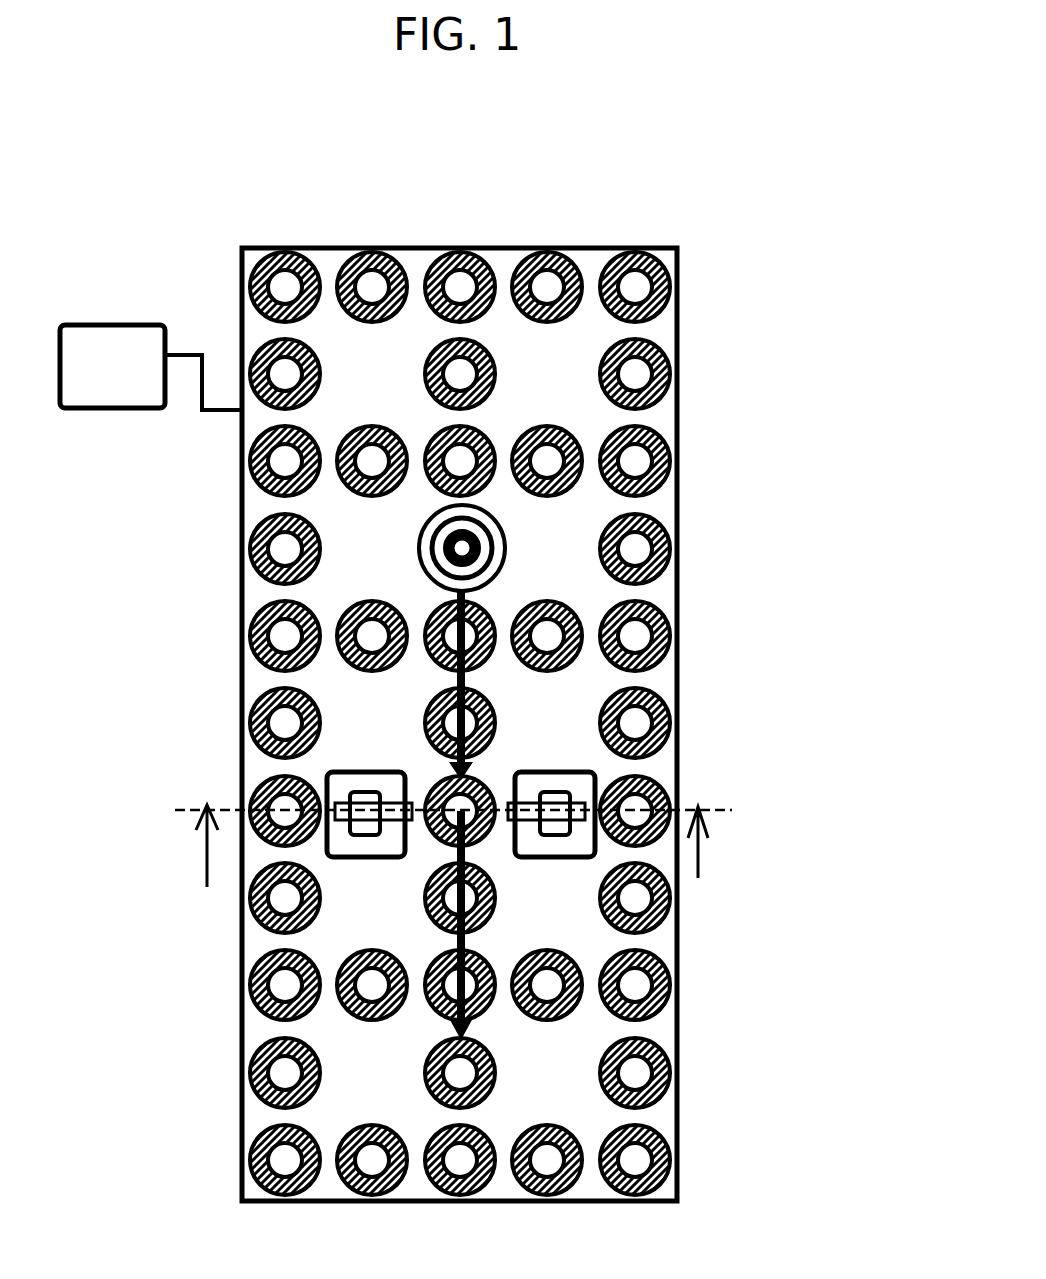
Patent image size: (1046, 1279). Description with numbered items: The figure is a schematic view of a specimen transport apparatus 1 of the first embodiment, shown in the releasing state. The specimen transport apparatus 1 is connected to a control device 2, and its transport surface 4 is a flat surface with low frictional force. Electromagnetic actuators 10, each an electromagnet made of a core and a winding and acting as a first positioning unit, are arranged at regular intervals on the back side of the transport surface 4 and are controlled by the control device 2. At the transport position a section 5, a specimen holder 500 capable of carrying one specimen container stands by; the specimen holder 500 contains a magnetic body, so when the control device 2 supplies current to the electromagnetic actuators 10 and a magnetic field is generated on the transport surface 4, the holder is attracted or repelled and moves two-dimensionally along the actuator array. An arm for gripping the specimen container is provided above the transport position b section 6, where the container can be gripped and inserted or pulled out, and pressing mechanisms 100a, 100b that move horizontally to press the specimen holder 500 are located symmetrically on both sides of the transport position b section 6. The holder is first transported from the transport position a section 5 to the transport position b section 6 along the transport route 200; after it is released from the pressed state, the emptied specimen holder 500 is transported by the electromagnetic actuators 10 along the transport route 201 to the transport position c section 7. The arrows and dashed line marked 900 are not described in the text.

The specimen transport apparatus 1 is at (331, 248).
The control device 2 is at (137, 325).
The transport surface 4 is at (545, 405).
The transport position a section 5 is at (492, 530).
The specimen holder 500 is at (493, 577).
The electromagnetic actuator 10 is at (245, 560).
The transport route 200 is at (462, 690).
The transport route 201 is at (460, 943).
The transport position b section 6 is at (472, 826).
The transport position c section 7 is at (485, 1075).
The pressing mechanism 100a is at (328, 790).
The pressing mechanism 100b is at (598, 785).
The conveyance direction 900 is at (439, 846).